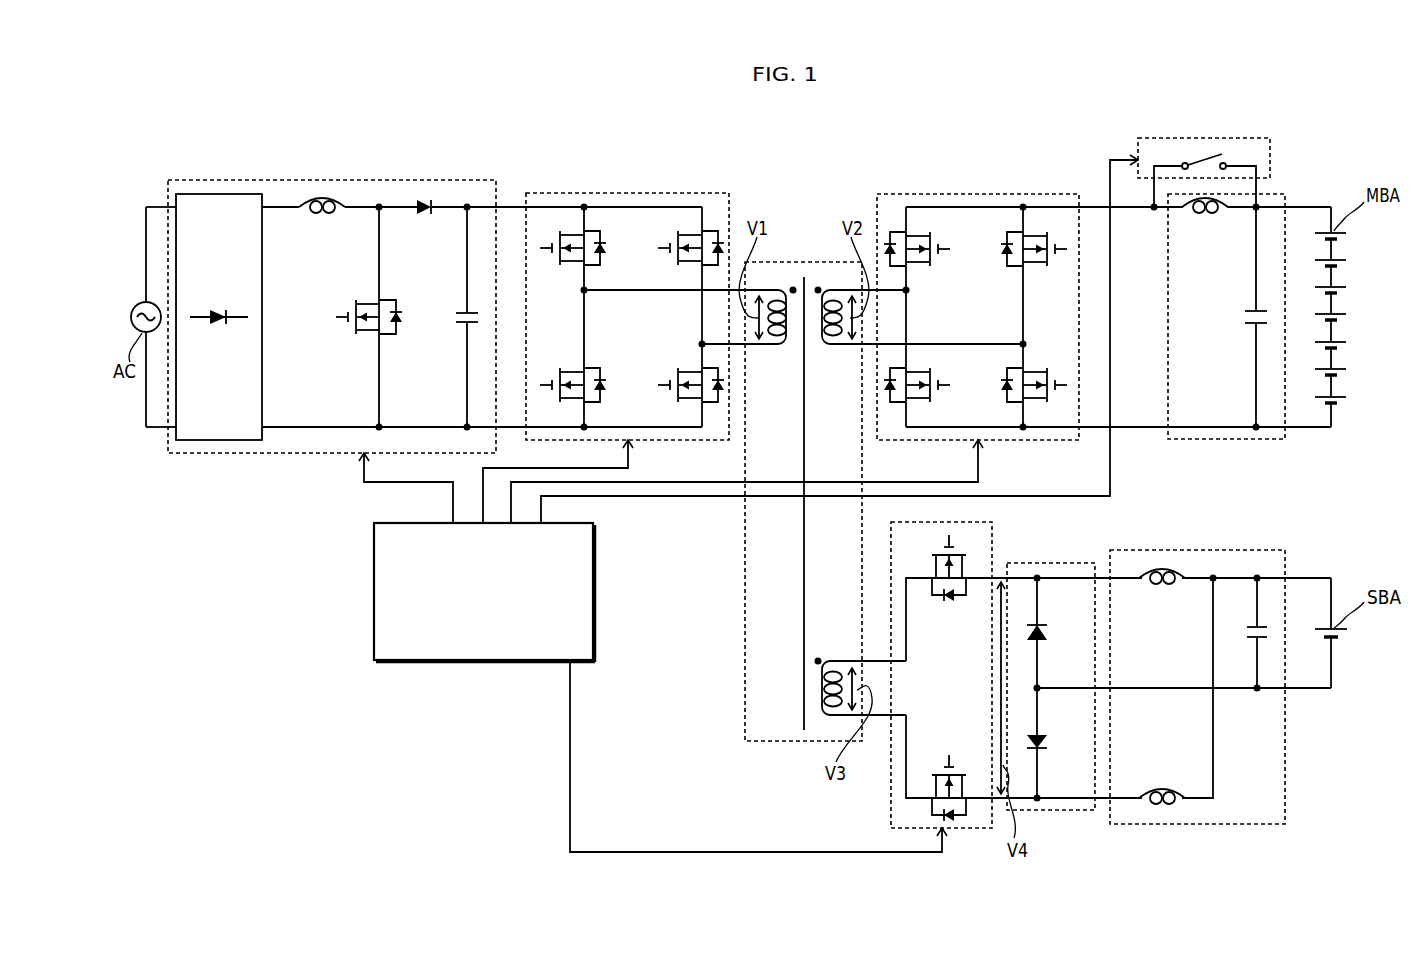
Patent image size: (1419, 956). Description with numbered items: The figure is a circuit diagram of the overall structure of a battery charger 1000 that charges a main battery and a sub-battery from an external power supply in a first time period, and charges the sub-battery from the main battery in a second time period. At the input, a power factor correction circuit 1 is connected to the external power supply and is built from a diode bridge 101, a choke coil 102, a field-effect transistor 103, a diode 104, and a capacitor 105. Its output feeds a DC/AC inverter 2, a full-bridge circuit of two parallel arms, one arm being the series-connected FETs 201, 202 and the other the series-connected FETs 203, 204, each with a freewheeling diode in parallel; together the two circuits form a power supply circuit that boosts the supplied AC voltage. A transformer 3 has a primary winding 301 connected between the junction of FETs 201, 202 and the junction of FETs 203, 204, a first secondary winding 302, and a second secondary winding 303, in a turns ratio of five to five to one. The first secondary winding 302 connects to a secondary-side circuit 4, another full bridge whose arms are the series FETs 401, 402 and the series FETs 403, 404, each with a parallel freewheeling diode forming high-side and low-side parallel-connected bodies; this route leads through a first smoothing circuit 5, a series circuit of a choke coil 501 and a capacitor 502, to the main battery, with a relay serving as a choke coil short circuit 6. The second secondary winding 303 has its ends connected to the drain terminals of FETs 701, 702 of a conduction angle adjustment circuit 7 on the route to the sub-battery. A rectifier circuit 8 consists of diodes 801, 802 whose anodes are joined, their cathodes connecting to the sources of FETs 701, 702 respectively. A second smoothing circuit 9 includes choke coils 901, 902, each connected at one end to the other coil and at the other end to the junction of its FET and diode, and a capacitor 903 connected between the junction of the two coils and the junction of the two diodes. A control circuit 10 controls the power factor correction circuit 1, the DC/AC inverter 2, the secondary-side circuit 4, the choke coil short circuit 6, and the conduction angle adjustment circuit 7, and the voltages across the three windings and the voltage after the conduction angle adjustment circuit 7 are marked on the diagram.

The battery charger 1000 is at (777, 138).
The power factor correction circuit 1 is at (216, 180).
The diode bridge 101 is at (262, 318).
The choke coil 102 is at (316, 214).
The field-effect transistor 103 is at (357, 334).
The diode 104 is at (425, 216).
The capacitor 105 is at (463, 322).
The DC/AC inverter 2 is at (597, 193).
The FET 201 is at (576, 266).
The FET 202 is at (584, 372).
The FET 203 is at (670, 240).
The FET 204 is at (670, 374).
The transformer 3 is at (798, 262).
The primary winding 301 is at (773, 346).
The first secondary winding 302 is at (841, 346).
The second secondary winding 303 is at (825, 657).
The secondary-side circuit 4 is at (877, 194).
The FET 401 is at (948, 257).
The FET 402 is at (948, 392).
The FET 403 is at (1040, 270).
The FET 404 is at (1037, 366).
The first smoothing circuit 5 is at (1284, 194).
The choke coil 501 is at (1205, 218).
The capacitor 502 is at (1248, 330).
The choke coil short circuit 6 is at (1270, 138).
The conduction angle adjustment circuit 7 is at (891, 770).
The FET 701 is at (950, 598).
The FET 702 is at (943, 758).
The rectifier circuit 8 is at (1048, 563).
The diode 801 is at (1047, 626).
The diode 802 is at (1047, 748).
The second smoothing circuit 9 is at (1210, 550).
The choke coil 901 is at (1167, 585).
The choke coil 902 is at (1163, 792).
The capacitor 903 is at (1256, 690).
The control circuit 10 is at (374, 583).